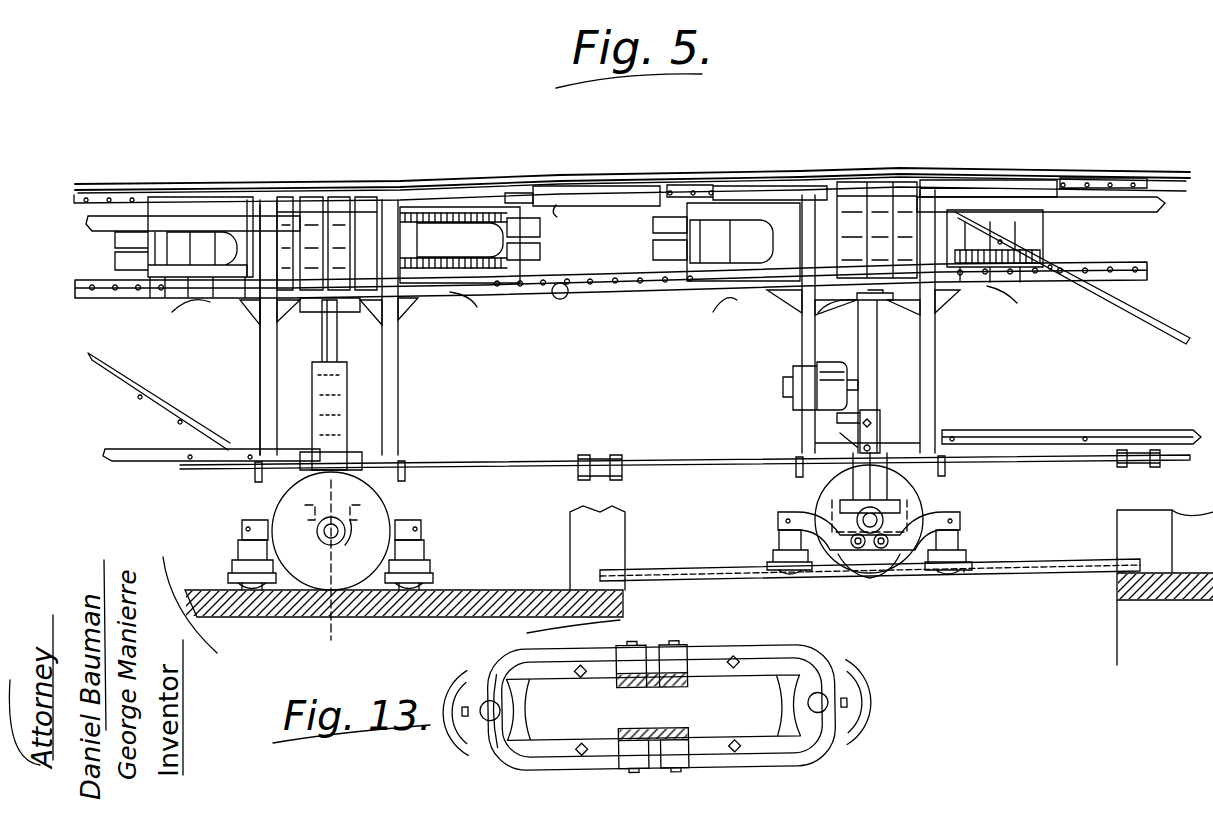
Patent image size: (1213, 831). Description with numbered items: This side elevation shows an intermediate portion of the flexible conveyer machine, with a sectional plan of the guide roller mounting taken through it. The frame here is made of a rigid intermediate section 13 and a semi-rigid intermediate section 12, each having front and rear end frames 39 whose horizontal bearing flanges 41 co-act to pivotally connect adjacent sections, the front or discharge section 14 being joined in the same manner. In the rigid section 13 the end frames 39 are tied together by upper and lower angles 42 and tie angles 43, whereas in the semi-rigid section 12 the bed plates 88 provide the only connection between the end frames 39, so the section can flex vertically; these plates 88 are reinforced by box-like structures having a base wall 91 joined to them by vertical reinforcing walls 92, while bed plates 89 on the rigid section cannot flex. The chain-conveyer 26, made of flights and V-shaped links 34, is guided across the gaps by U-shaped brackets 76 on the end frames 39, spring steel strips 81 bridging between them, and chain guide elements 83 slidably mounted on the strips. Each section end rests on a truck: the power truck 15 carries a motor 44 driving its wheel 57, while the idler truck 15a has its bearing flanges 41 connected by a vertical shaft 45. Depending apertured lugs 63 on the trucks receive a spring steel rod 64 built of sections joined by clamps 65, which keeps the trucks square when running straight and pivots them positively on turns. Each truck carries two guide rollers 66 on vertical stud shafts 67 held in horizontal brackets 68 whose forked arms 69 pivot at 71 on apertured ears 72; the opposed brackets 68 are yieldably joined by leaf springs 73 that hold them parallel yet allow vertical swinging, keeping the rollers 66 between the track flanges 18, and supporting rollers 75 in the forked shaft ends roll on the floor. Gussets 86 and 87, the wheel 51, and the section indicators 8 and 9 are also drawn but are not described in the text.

In FIG. 5, the bed plate 89 is at (185, 195).
In FIG. 5, the chain guide element 83 is at (283, 230).
In FIG. 5, the vertical reinforcing wall 92 is at (380, 198).
In FIG. 5, the bed plate 88 is at (517, 192).
In FIG. 5, the chain-conveyer 26 is at (92, 292).
In FIG. 5, the U-shaped bracket 76 is at (167, 274).
In FIG. 5, the spring steel strip 81 is at (537, 250).
In FIG. 5, the base wall 91 is at (569, 217).
In FIG. 5, the front or discharge section 14 is at (690, 230).
In FIG. 5, the upper and lower angle 42 is at (97, 228).
In FIG. 5, the tie angle 43 is at (92, 366).
In FIG. 5, the intermediate section 13 is at (800, 497).
In FIG. 5, the end frame 39 is at (260, 380).
In FIG. 5, the vertical shaft 45 is at (320, 348).
In FIG. 5, the bearing flange 41 is at (340, 300).
In FIG. 5, the intermediate idler truck 15a is at (335, 395).
In FIG. 5, the gusset 87 is at (744, 309).
In FIG. 5, the link 34 is at (600, 285).
In FIG. 5, the intermediate section 12 is at (437, 330).
In FIG. 5, the gusset 86 is at (454, 319).
In FIG. 5, the motor 44 is at (790, 392).
In FIG. 5, the spring steel rod 64 is at (465, 468).
In FIG. 5, the clamp 65 is at (606, 459).
In FIG. 5, the apertured lug 63 is at (255, 478).
In FIG. 5, the wheel 57 is at (835, 490).
In FIG. 5, the power truck 15 is at (887, 486).
In FIG. 5, the vertical flange 18 is at (672, 565).
In FIG. 5, the bracket 68 is at (242, 531).
In FIG. 13, the bracket 68 is at (796, 648).
In FIG. 5, the guide roller 66 is at (232, 575).
In FIG. 13, the guide roller 66 is at (470, 752).
In FIG. 5, the wheel 51 is at (310, 570).
In FIG. 5, the supporting roller 75 is at (230, 585).
In FIG. 5, the pivotal mounting 71 is at (870, 549).
In FIG. 13, the pivotal mounting 71 is at (640, 646).
In FIG. 5, the leaf spring 73 is at (893, 552).
In FIG. 13, the leaf spring 73 is at (698, 742).
In FIG. 13, the vertical stud shaft 67 is at (488, 702).
In FIG. 13, the forked arm 69 is at (705, 652).
In FIG. 13, the apertured ear 72 is at (647, 728).
In FIG. 5, the section line 9 is at (323, 262).
In FIG. 5, the section line 8 is at (865, 192).